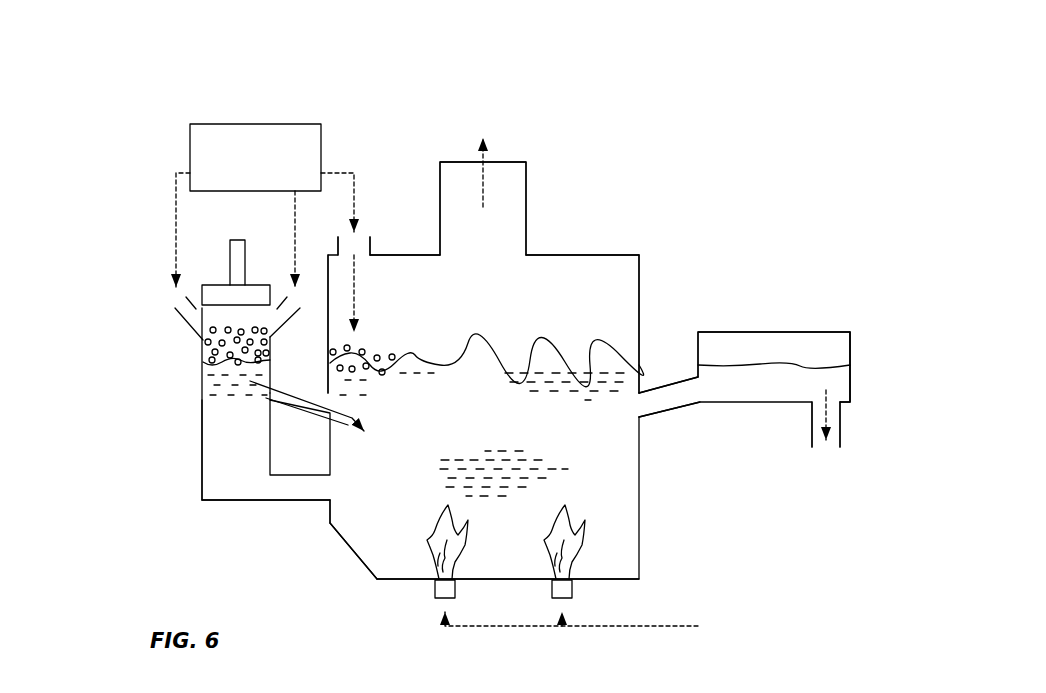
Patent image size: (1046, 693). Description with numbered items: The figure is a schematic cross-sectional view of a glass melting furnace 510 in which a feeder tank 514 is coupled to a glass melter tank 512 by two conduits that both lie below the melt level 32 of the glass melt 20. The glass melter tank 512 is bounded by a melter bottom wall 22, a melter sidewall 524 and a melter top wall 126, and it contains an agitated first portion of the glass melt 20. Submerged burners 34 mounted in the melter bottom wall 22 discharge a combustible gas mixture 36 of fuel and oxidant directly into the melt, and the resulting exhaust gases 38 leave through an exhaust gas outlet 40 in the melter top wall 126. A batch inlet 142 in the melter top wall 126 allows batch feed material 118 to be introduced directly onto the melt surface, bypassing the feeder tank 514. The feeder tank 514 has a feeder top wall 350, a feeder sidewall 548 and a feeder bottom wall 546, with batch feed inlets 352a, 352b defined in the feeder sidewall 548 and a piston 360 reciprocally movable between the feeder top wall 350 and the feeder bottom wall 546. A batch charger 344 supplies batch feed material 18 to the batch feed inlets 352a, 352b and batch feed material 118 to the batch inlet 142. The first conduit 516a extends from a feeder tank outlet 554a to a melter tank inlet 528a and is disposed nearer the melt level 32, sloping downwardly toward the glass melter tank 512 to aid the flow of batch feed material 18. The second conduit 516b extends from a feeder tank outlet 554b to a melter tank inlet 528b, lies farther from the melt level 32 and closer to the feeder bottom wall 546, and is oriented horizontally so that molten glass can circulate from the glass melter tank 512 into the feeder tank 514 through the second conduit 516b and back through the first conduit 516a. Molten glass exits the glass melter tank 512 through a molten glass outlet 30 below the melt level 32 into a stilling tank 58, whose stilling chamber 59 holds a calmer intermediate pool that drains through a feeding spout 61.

The glass melting furnace 510 is at (702, 120).
The glass melter tank 512 is at (596, 216).
The exhaust gases 38 is at (503, 164).
The exhaust gas outlet 40 is at (527, 178).
The batch inlet 142 is at (365, 222).
The melter top wall 126 is at (404, 253).
The melter sidewall 524 is at (328, 275).
The batch charger 344 is at (265, 228).
The piston 360 is at (240, 238).
The feeder top wall 350 is at (218, 284).
The batch feed inlet 352a is at (176, 312).
The batch feed inlet 352b is at (283, 332).
The melt level 32 is at (230, 362).
The batch feed material 18 is at (228, 358).
The feeder tank 514 is at (148, 408).
The feeder tank outlet 554a is at (256, 397).
The first conduit 516a is at (293, 405).
The melter tank inlet 528a is at (318, 424).
The batch feed material 118 is at (381, 341).
The glass melt 20 is at (482, 434).
The stilling chamber 59 is at (810, 343).
The stilling tank 58 is at (852, 344).
The feeding spout 61 is at (842, 420).
The molten glass outlet 30 is at (595, 432).
The feeder sidewall 548 is at (200, 499).
The feeder bottom wall 546 is at (220, 500).
The feeder tank outlet 554b is at (261, 502).
The second conduit 516b is at (283, 502).
The melter tank inlet 528b is at (322, 508).
The melter bottom wall 22 is at (392, 582).
The submerged burners 34 is at (550, 588).
The combustible gas mixture 36 is at (588, 628).